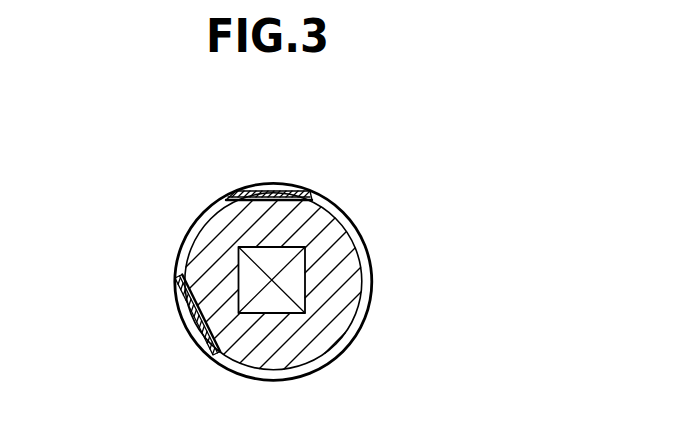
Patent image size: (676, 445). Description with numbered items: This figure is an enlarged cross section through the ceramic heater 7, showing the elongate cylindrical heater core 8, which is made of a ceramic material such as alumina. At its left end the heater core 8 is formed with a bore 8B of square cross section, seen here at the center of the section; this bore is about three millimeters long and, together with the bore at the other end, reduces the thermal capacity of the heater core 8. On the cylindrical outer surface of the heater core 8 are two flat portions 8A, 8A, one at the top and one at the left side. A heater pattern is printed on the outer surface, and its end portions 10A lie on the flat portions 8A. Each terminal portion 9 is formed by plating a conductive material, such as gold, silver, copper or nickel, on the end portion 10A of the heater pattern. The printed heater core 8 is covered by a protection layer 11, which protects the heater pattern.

The ceramic heater 7 is at (276, 252).
The heater core 8 is at (342, 243).
The flat portion 8A is at (251, 193).
The bore 8B is at (243, 262).
The terminal portion 9 is at (284, 191).
The end portion of the heater pattern 10A is at (278, 192).
The protection layer 11 is at (370, 306).